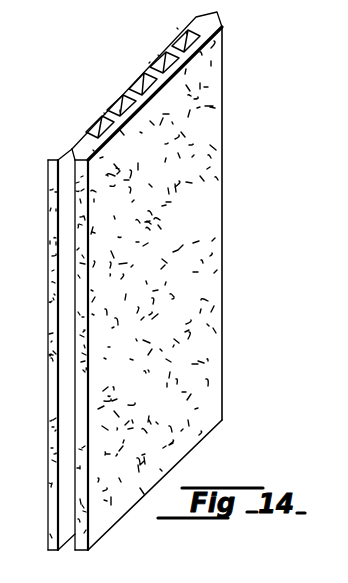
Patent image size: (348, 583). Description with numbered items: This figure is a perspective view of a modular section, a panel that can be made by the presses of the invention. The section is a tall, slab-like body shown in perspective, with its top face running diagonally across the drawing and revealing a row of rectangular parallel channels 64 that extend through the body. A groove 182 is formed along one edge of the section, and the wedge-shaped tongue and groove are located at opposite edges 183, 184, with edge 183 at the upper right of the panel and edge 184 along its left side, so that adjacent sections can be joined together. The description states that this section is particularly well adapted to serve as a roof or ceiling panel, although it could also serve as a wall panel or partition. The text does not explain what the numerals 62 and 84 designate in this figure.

The building block body 62 is at (147, 478).
The rectangular parallel channels 64 is at (158, 62).
The block assembly 84 is at (45, 345).
The groove 182 is at (74, 159).
The edge 183 is at (218, 13).
The edge 184 is at (53, 222).